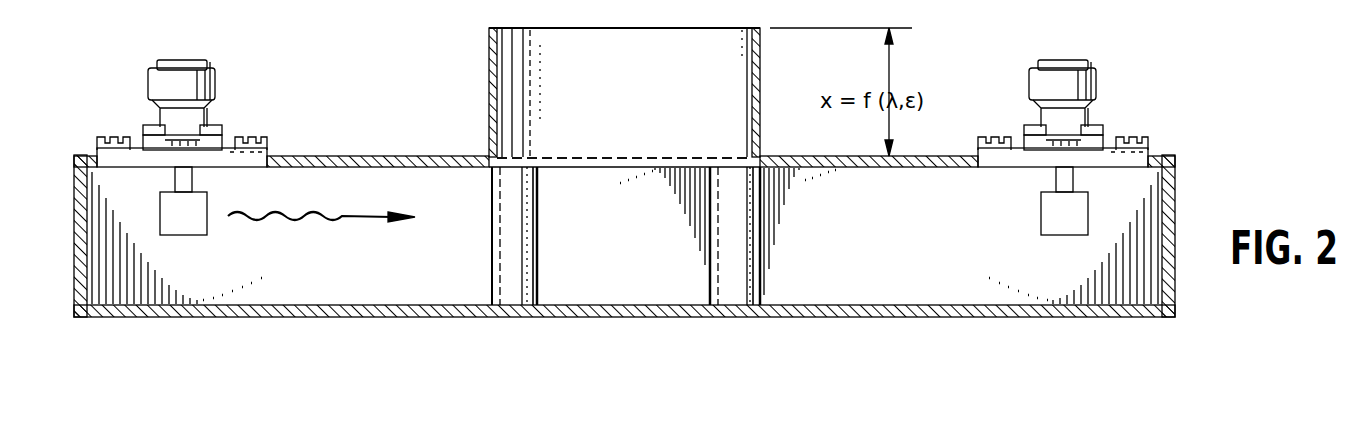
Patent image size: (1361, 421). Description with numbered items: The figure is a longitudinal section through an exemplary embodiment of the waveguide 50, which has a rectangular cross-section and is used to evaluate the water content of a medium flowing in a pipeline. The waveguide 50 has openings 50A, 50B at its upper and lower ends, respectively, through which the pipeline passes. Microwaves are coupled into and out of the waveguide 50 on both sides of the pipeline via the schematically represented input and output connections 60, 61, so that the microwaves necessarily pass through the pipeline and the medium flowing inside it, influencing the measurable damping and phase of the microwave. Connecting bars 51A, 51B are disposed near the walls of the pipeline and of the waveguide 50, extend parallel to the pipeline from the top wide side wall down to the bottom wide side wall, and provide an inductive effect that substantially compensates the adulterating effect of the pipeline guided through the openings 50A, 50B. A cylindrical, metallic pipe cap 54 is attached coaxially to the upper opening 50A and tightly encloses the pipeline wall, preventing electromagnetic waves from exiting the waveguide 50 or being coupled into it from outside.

The waveguide 50 is at (368, 150).
The upper opening of the waveguide 50A is at (647, 157).
The lower opening of the waveguide 50B is at (645, 318).
The connecting bar 51A is at (503, 318).
The connecting bar 51B is at (737, 300).
The pipe cap 54 is at (482, 38).
The input connection 60 is at (162, 112).
The output connection 61 is at (1092, 116).